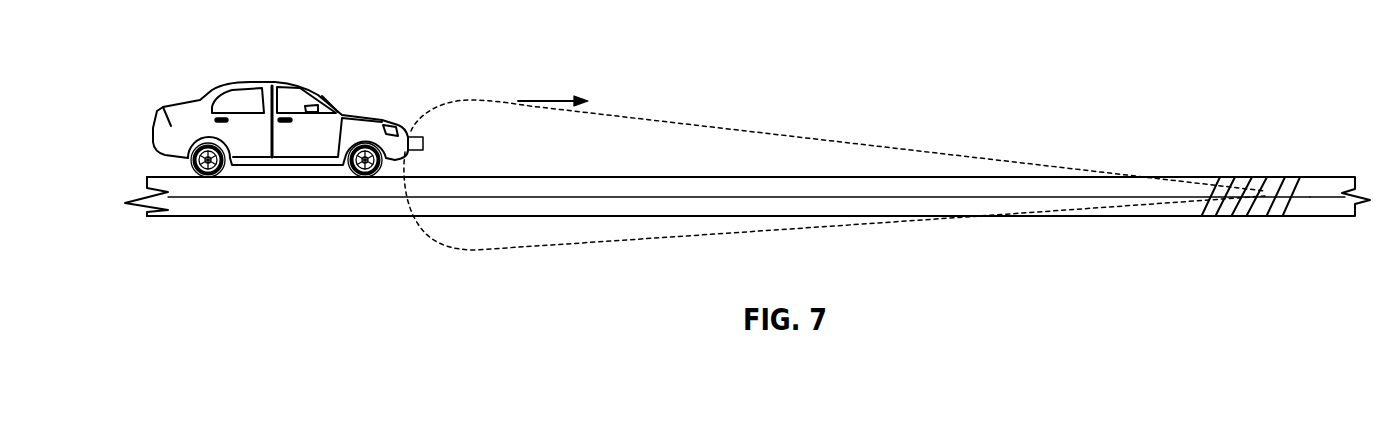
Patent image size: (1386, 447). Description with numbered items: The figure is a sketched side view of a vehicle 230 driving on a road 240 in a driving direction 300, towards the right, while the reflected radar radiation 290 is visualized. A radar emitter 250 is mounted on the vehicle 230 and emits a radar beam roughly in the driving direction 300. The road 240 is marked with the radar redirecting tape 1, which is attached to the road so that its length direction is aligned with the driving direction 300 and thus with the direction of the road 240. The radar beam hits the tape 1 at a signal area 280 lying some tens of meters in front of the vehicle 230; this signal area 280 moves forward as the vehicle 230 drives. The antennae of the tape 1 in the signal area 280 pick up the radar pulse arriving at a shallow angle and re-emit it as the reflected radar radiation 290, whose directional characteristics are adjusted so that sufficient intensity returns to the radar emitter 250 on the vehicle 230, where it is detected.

The radar redirecting tape 1 is at (1321, 185).
The vehicle 230 is at (192, 108).
The road 240 is at (335, 207).
The radar emitter 250 is at (424, 143).
The signal area 280 is at (1266, 185).
The reflected radar radiation 290 is at (690, 138).
The driving direction 300 is at (552, 98).